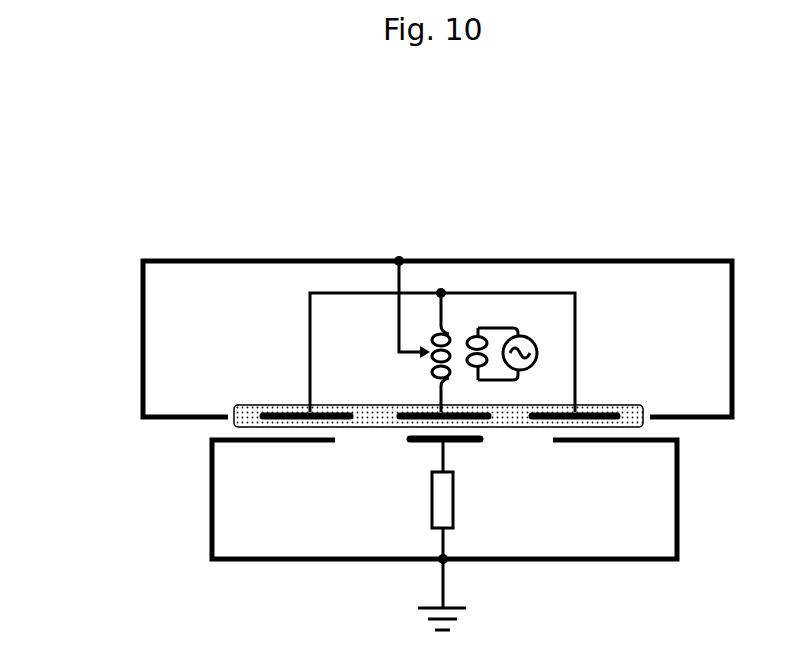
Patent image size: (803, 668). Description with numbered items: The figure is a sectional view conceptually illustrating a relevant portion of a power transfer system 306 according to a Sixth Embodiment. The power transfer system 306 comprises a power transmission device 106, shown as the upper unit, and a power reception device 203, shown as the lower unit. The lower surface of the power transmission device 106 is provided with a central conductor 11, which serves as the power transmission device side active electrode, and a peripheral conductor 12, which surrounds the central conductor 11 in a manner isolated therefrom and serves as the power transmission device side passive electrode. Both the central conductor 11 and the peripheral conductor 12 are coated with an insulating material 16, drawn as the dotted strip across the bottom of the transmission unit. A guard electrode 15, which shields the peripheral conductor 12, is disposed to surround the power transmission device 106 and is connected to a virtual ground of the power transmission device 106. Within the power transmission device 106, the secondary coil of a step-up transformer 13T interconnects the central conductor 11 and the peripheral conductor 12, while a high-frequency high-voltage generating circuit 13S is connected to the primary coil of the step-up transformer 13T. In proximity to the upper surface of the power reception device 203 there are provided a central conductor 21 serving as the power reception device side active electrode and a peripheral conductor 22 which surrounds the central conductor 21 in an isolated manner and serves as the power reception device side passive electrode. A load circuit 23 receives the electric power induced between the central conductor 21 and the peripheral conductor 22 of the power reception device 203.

The power transfer system 306 is at (786, 155).
The power transmission device 106 is at (103, 272).
The guard electrode 15 is at (733, 262).
The step-up transformer 13T is at (456, 334).
The high-frequency high-voltage generating circuit 13S is at (537, 355).
The insulating material 16 is at (375, 428).
The peripheral conductor 12 is at (272, 410).
The central conductor 11 is at (405, 410).
The power reception device 203 is at (134, 523).
The peripheral conductor 22 is at (677, 562).
The central conductor 21 is at (473, 442).
The load circuit 23 is at (432, 500).